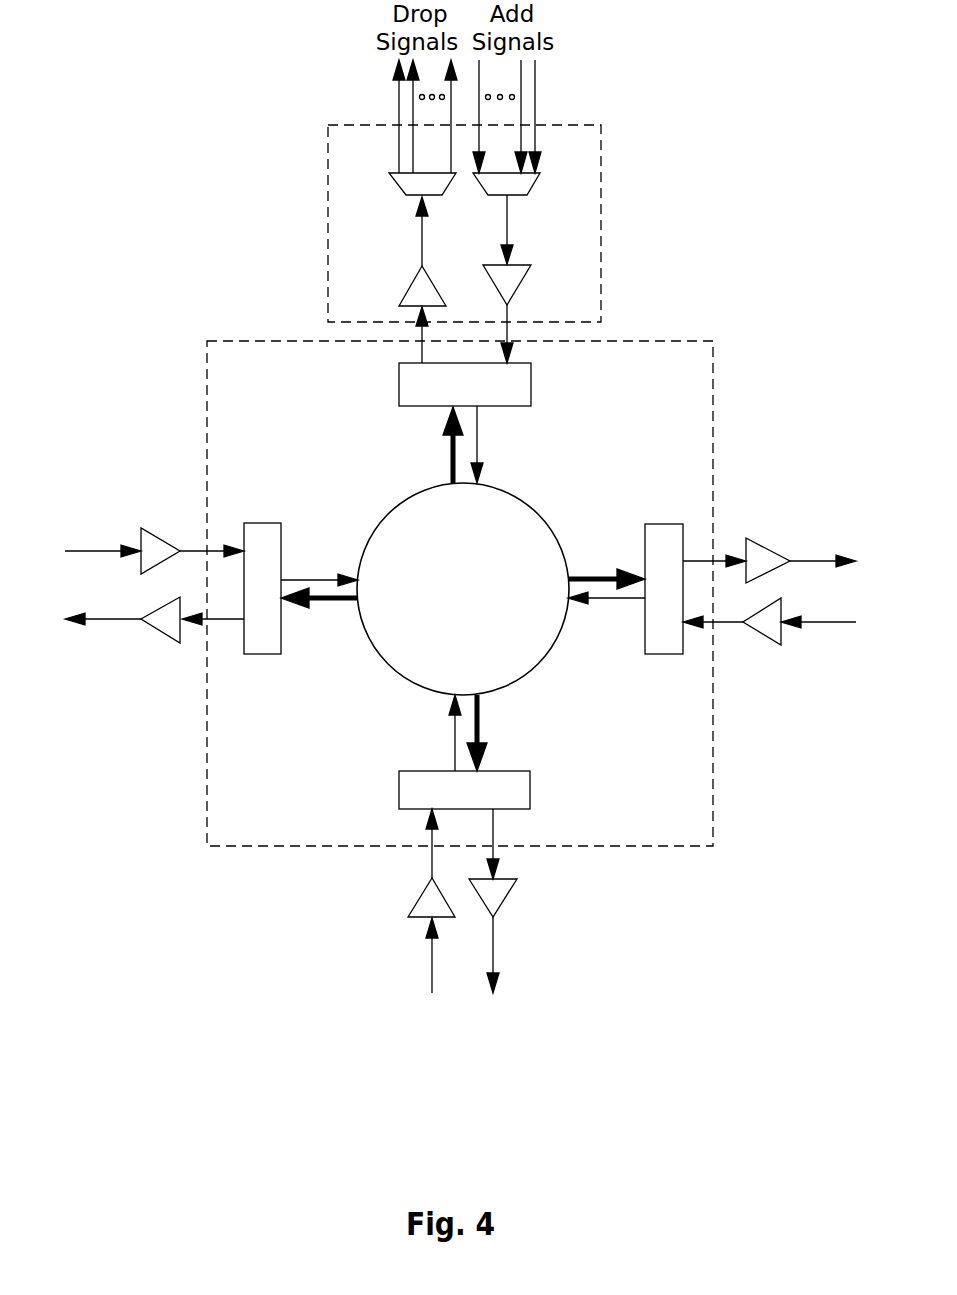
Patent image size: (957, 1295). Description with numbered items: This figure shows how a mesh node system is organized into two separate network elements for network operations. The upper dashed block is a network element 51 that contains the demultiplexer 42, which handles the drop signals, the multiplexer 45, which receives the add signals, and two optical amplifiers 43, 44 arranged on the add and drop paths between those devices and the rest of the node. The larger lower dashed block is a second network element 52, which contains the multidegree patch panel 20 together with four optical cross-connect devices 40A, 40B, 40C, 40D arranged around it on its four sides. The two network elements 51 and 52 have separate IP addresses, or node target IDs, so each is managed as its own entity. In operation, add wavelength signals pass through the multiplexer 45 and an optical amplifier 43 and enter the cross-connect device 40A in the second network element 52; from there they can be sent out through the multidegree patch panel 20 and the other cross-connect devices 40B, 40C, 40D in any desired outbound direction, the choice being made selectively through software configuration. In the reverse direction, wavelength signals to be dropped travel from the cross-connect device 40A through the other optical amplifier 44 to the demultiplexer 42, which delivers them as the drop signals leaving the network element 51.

The patch panel 20 is at (522, 498).
The optical cross-connect device 40A is at (531, 392).
The optical cross-connect device 40B is at (650, 654).
The optical cross-connect device 40C is at (399, 800).
The optical cross-connect device 40D is at (270, 523).
The demultiplexer 42 is at (400, 193).
The optical amplifier 43 is at (518, 290).
The optical amplifier 44 is at (410, 286).
The multiplexer 45 is at (527, 192).
The network element 51 is at (328, 225).
The second network element 52 is at (713, 790).